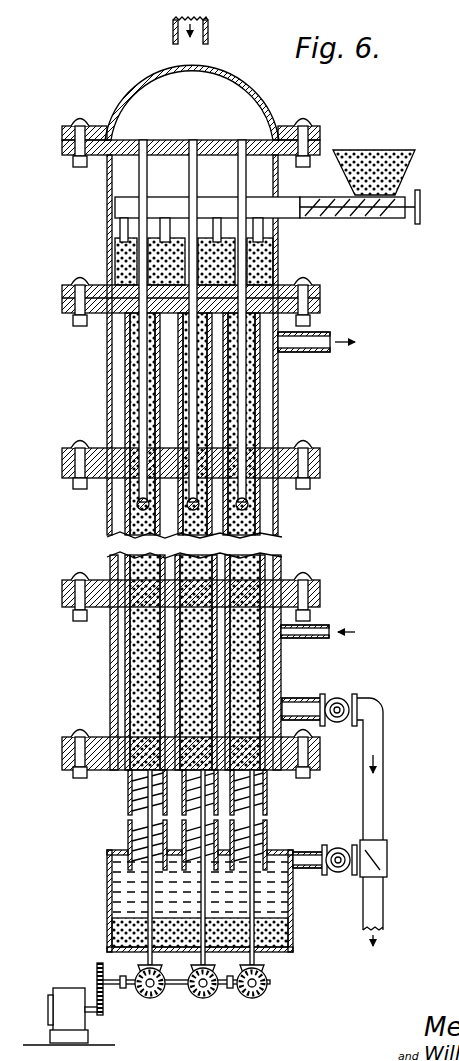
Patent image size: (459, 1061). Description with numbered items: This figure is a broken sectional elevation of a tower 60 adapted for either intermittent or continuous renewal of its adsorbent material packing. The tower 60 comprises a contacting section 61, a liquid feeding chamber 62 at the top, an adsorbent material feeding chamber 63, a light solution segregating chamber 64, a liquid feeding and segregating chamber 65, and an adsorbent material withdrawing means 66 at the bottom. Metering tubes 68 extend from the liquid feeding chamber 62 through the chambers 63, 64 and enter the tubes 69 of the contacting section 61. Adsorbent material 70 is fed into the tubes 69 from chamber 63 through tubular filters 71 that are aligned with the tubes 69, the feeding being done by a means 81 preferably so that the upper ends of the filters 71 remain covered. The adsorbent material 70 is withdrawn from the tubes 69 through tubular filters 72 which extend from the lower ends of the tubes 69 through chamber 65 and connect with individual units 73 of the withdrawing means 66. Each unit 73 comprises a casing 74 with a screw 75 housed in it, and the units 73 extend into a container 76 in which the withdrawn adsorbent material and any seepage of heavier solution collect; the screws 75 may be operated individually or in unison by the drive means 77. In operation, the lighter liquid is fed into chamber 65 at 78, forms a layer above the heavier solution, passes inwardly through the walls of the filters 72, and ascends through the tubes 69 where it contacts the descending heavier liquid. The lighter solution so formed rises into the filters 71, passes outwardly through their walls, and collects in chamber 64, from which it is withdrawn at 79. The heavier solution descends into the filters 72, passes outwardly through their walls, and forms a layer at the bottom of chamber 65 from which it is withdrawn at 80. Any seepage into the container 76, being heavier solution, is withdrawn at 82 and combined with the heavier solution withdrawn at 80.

The tower 60 is at (318, 511).
The contacting section 61 is at (282, 557).
The liquid feeding chamber 62 is at (230, 66).
The adsorbent material feeding chamber 63 is at (262, 158).
The light solution segregating chamber 64 is at (272, 428).
The liquid feeding and segregating chamber 65 is at (275, 676).
The adsorbent material withdrawing means 66 is at (301, 899).
The metering tubes 68 is at (196, 197).
The tubes 69 is at (263, 519).
The adsorbent material 70 is at (263, 282).
The tubular filters 71 is at (192, 383).
The tubular filters 72 is at (180, 669).
The units 73 is at (126, 816).
The casing 74 is at (128, 830).
The screw 75 is at (130, 798).
The container 76 is at (293, 948).
The means for operating screws 77 is at (196, 992).
The lighter liquid feed 78 is at (328, 627).
The lighter solution withdrawal 79 is at (300, 352).
The heavier solution withdrawal 80 is at (306, 706).
The adsorbent material feeding means 81 is at (368, 220).
The seepage withdrawal 82 is at (309, 852).